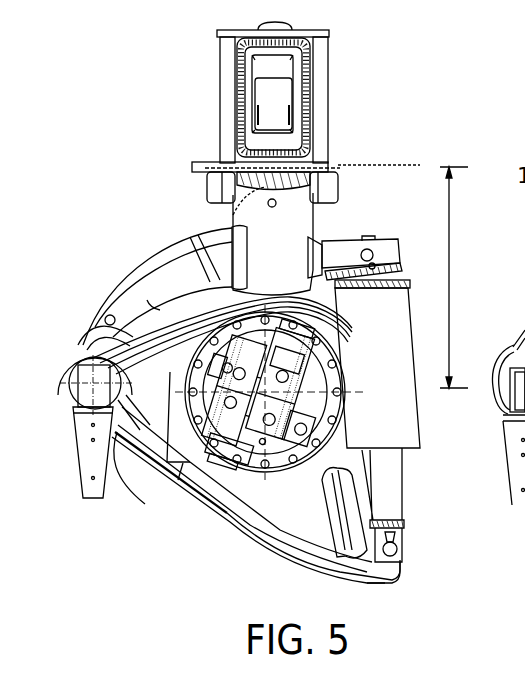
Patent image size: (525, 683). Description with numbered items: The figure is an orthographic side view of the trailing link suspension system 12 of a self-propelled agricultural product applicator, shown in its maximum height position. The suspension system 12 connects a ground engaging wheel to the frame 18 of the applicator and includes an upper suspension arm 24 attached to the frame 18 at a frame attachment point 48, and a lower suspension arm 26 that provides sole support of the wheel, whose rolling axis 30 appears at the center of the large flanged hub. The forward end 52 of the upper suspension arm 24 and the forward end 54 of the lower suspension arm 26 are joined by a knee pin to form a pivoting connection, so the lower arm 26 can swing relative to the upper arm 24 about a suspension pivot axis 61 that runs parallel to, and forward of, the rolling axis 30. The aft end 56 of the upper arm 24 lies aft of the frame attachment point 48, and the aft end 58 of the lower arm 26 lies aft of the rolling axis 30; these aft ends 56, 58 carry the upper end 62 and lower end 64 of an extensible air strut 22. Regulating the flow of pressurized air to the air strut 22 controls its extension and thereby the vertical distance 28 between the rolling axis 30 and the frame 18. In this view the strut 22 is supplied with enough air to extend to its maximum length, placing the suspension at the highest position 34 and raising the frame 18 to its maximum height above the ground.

The trailing link suspension system 12 is at (127, 232).
The frame 18 is at (318, 82).
The extensible air strut 22 is at (402, 433).
The upper suspension arm 24 is at (297, 212).
The lower suspension arm 26 is at (223, 510).
The vertical distance 28 is at (452, 250).
The rolling axis 30 is at (312, 406).
The highest position 34 is at (452, 318).
The frame attachment point 48 is at (230, 218).
The forward end of the upper suspension arm 52 is at (93, 345).
The forward end of the lower suspension arm 54 is at (117, 432).
The aft end of the upper suspension arm 56 is at (392, 257).
The aft end of the lower suspension arm 58 is at (377, 572).
The suspension pivot axis 61 is at (82, 390).
The upper end of the air strut 62 is at (395, 266).
The lower end of the air strut 64 is at (402, 542).